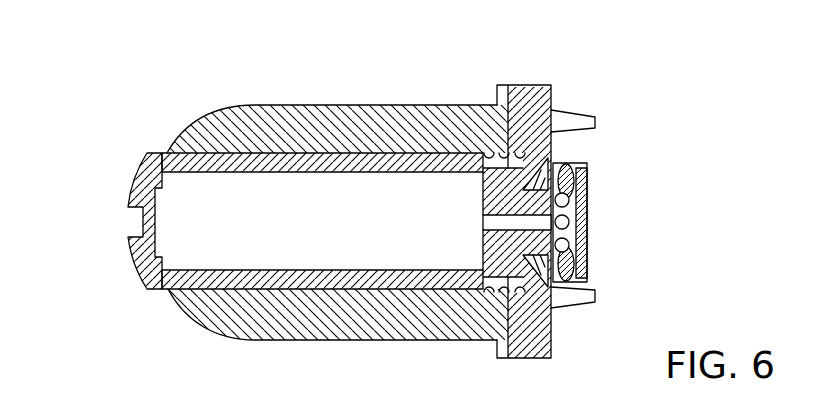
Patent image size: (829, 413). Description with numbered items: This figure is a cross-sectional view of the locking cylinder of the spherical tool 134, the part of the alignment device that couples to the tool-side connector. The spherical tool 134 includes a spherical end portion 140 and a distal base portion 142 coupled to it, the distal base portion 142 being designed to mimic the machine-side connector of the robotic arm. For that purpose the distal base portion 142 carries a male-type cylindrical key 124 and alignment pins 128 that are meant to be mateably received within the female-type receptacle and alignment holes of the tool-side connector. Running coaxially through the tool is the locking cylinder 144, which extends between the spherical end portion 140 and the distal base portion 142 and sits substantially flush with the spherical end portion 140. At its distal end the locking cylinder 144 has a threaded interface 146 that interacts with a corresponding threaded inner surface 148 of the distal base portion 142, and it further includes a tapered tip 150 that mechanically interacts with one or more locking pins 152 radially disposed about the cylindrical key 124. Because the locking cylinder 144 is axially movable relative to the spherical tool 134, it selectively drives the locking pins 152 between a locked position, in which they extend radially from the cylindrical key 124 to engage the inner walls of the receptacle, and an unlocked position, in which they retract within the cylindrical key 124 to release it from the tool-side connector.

The spherical tool 134 is at (334, 70).
The spherical end portion 140 is at (220, 110).
The distal base portion 142 is at (527, 86).
The locking cylinder 144 is at (139, 197).
The alignment pins 128 is at (573, 111).
The tapered tip 150 is at (570, 166).
The locking pins 152 is at (573, 197).
The cylindrical key 124 is at (615, 204).
The threaded inner surface 148 is at (522, 273).
The threaded interface 146 is at (527, 294).